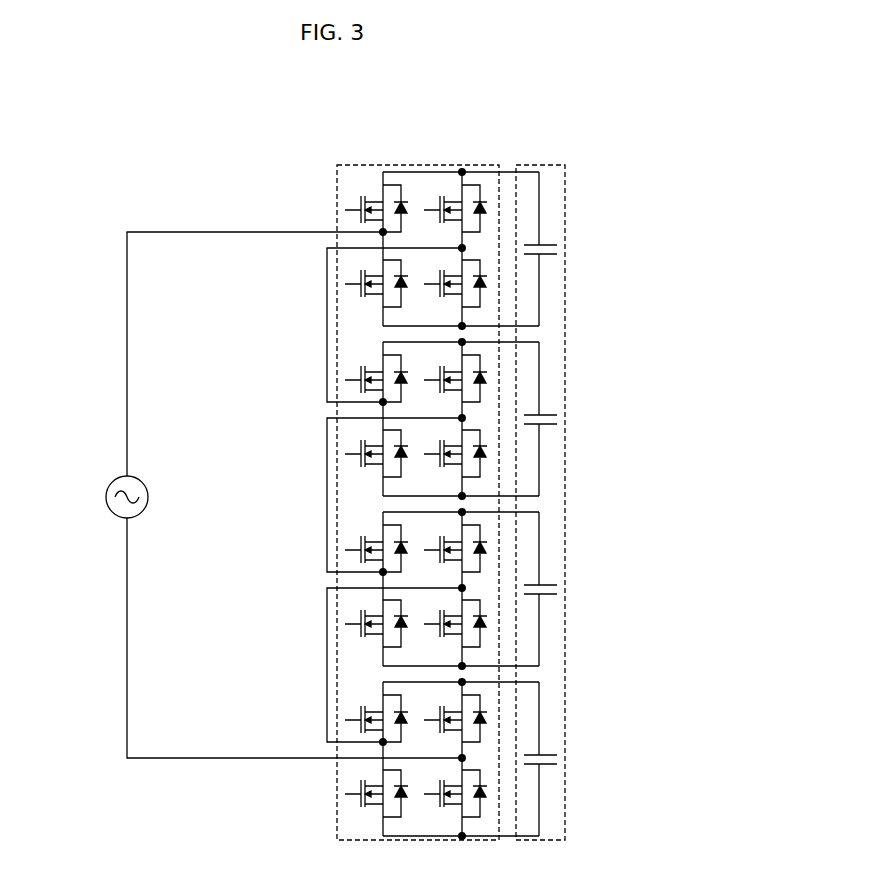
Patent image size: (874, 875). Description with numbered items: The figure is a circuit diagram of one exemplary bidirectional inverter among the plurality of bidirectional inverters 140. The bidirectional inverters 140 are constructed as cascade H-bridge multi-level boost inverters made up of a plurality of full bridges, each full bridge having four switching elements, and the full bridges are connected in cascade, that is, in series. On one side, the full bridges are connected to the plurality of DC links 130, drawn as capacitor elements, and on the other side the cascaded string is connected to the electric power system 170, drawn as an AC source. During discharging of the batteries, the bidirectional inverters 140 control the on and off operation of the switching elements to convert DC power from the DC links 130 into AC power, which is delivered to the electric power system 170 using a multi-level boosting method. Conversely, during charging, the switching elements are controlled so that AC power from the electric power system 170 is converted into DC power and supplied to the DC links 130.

The bidirectional inverters 140 is at (337, 165).
The DC links 130 is at (565, 165).
The electric power system 170 is at (108, 478).